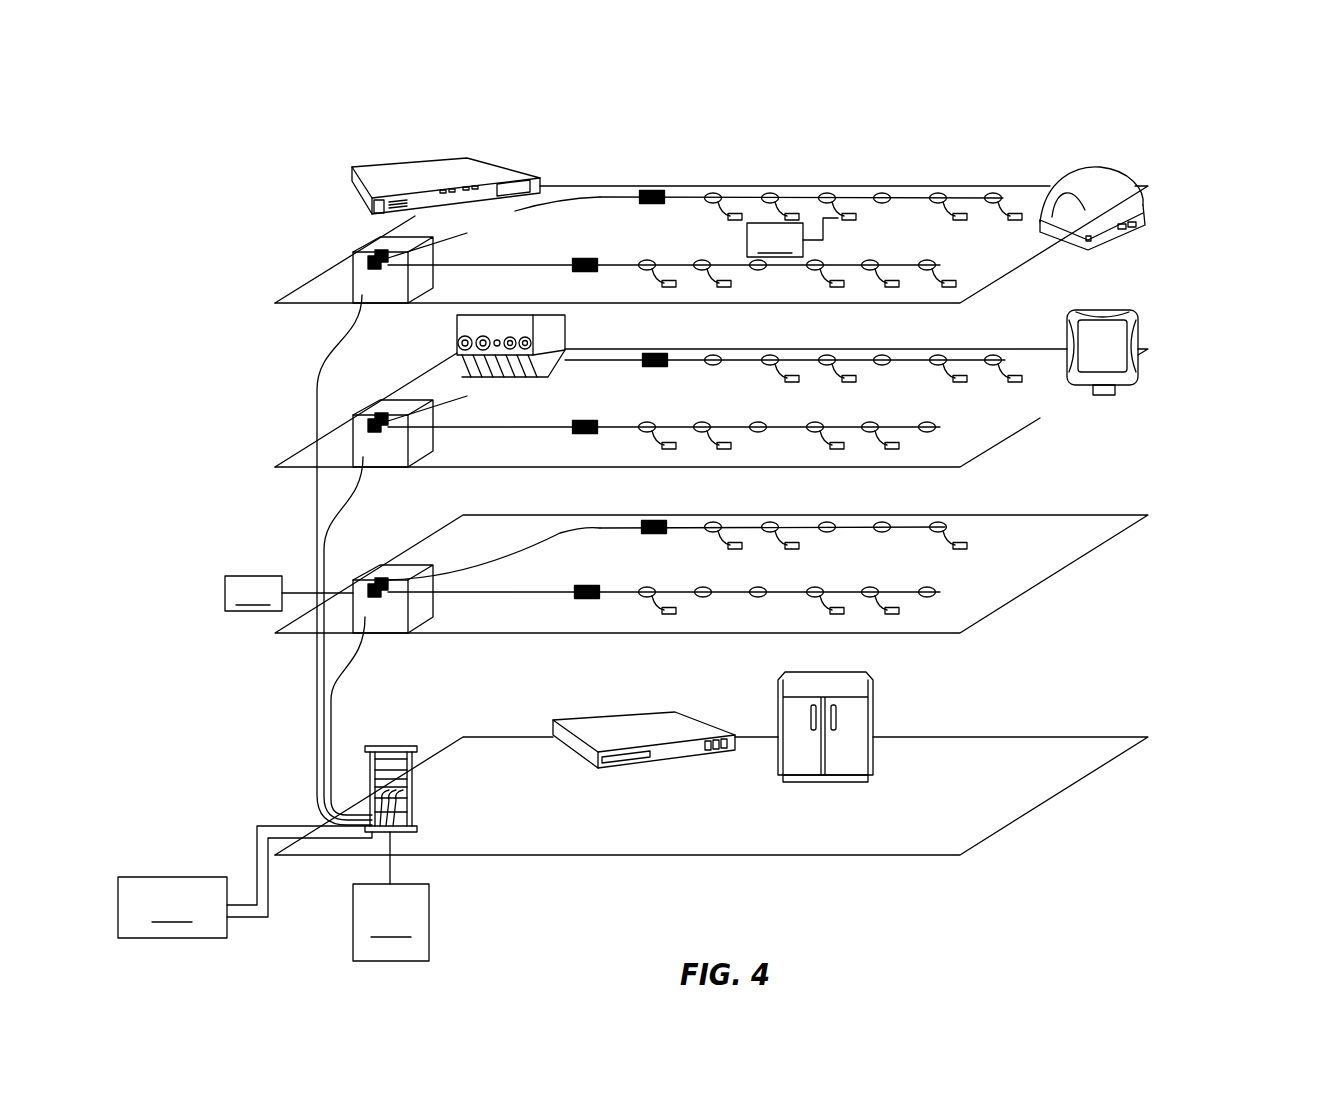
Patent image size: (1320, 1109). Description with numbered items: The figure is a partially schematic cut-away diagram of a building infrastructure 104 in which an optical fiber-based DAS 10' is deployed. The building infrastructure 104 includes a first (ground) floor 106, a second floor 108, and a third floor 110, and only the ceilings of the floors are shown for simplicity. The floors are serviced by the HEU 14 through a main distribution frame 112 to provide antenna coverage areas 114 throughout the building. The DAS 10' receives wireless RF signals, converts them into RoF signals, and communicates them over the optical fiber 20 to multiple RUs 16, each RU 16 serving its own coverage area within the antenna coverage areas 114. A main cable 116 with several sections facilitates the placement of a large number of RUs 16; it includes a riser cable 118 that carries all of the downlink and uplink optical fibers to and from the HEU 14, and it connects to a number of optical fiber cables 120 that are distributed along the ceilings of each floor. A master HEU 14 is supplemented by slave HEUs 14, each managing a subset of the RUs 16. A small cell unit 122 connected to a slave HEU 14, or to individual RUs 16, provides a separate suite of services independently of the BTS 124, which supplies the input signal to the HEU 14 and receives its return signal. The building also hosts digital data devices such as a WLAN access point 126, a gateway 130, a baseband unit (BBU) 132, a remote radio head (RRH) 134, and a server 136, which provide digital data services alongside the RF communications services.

The optical fiber-based DAS 10' is at (893, 91).
The HEU 14 is at (962, 546).
The RU 16 is at (960, 212).
The optical fiber 20 is at (522, 216).
The building infrastructure 104 is at (240, 535).
The first (ground) floor 106 is at (1100, 465).
The second floor 108 is at (1111, 298).
The third floor 110 is at (1141, 149).
The main distribution frame 112 is at (385, 833).
The antenna coverage areas 114 is at (950, 323).
The main cable 116 is at (262, 634).
The riser cable 118 is at (317, 702).
The optical fiber cables 120 is at (466, 398).
The small cell unit 122 is at (531, 589).
The BTS 124 is at (245, 882).
The WLAN access point 126 is at (1115, 183).
The gateway 130 is at (856, 715).
The baseband unit (BBU) 132 is at (668, 722).
The remote radio head (RRH) 134 is at (455, 325).
The server 136 is at (430, 168).